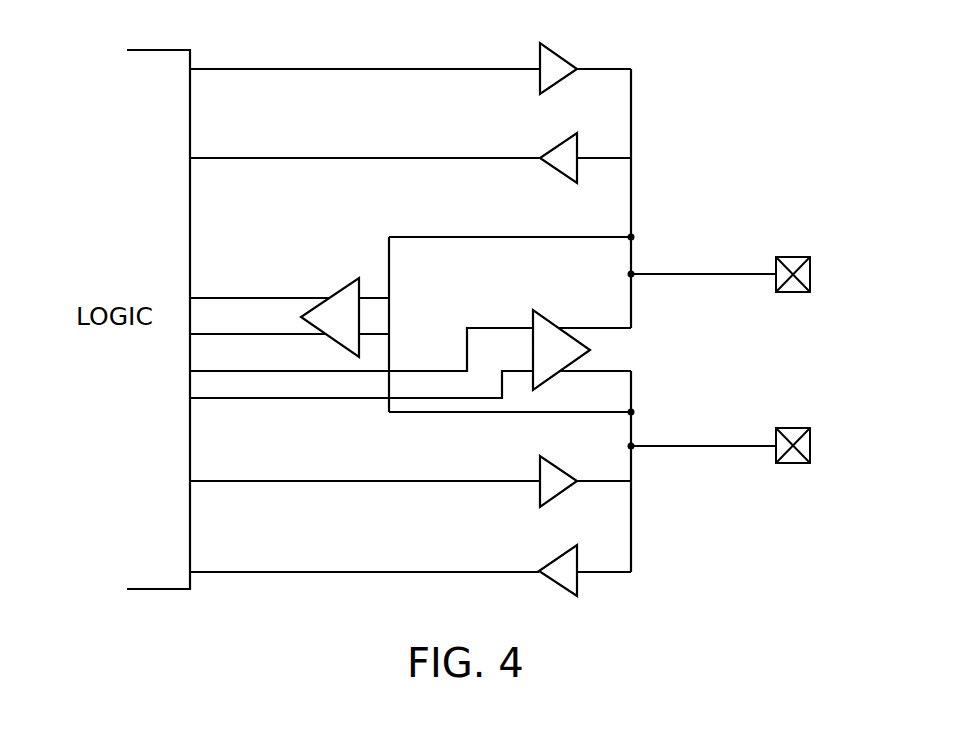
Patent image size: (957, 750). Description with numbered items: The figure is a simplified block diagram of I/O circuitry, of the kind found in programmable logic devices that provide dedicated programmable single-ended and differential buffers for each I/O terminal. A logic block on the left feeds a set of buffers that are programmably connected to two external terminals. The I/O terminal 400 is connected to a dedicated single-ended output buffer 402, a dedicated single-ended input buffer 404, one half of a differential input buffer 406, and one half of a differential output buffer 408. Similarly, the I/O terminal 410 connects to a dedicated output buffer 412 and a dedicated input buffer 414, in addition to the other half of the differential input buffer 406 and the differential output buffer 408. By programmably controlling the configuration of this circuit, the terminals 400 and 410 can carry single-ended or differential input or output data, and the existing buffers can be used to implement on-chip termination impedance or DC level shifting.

The I/O terminal 400 is at (791, 257).
The dedicated single-ended output buffer 402 is at (557, 50).
The dedicated single-ended input buffer 404 is at (558, 172).
The differential input buffer 406 is at (347, 285).
The differential output buffer 408 is at (545, 318).
The I/O terminal 410 is at (791, 428).
The dedicated output buffer 412 is at (538, 470).
The dedicated input buffer 414 is at (558, 557).